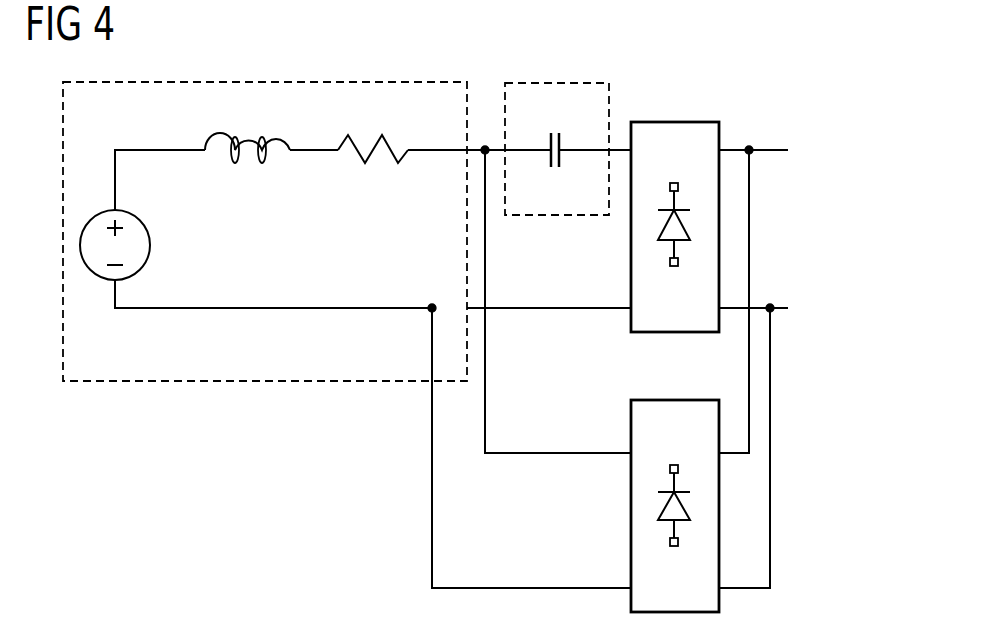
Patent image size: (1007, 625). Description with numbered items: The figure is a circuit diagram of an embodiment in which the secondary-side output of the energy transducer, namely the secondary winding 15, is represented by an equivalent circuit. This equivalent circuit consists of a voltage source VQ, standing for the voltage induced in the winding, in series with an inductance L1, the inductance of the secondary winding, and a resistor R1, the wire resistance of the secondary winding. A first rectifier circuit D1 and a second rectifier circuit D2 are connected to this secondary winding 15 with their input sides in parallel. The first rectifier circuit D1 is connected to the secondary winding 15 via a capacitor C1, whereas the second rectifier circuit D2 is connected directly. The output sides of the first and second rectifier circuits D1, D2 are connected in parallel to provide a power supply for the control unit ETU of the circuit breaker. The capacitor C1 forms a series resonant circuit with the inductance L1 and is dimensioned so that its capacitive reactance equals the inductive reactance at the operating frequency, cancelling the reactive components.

The secondary winding 15 is at (232, 381).
The voltage source VQ is at (125, 230).
The inductance L1 is at (247, 151).
The resistor R1 is at (373, 151).
The capacitor C1 is at (557, 149).
The first rectifier circuit D1 is at (675, 227).
The second rectifier circuit D2 is at (675, 506).
The control unit ETU is at (772, 229).